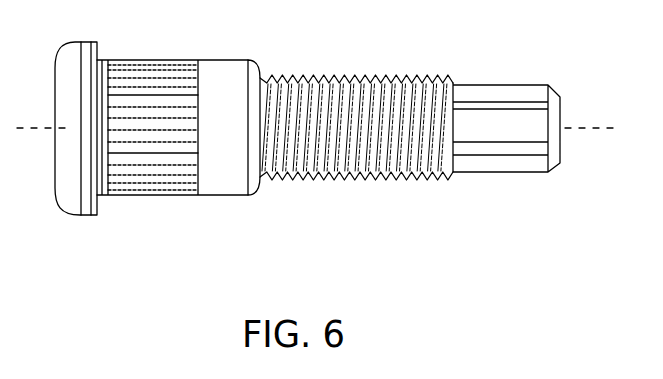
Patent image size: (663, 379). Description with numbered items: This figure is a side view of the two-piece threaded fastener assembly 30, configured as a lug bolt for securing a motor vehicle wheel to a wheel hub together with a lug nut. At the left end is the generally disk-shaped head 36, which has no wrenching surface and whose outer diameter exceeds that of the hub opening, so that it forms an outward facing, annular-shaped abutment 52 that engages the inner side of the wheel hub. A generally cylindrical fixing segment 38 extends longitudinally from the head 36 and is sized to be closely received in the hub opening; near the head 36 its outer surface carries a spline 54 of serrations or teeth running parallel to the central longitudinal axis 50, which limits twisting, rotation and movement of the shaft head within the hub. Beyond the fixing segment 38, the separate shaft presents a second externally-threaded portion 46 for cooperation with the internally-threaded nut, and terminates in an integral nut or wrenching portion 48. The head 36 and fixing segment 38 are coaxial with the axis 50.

The threaded fastener assembly 30 is at (323, 165).
The head 36 is at (70, 217).
The fixing segment 38 is at (240, 193).
The second externally-threaded portion 46 is at (363, 174).
The wrenching portion 48 is at (540, 173).
The central longitudinal axis 50 is at (585, 127).
The abutment 52 is at (97, 46).
The spline 54 is at (158, 197).